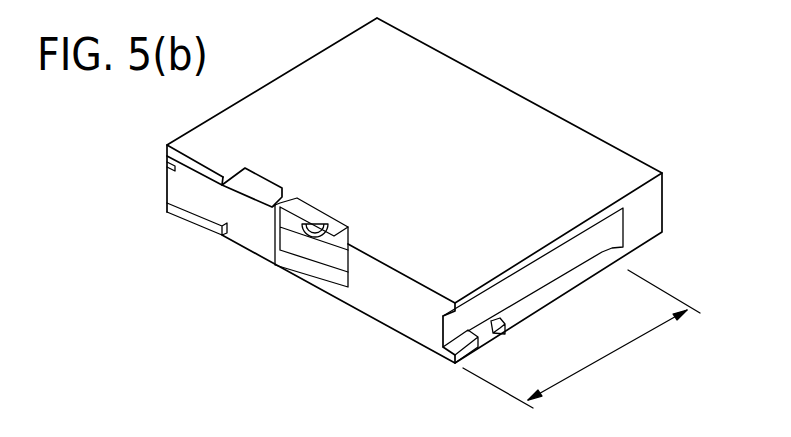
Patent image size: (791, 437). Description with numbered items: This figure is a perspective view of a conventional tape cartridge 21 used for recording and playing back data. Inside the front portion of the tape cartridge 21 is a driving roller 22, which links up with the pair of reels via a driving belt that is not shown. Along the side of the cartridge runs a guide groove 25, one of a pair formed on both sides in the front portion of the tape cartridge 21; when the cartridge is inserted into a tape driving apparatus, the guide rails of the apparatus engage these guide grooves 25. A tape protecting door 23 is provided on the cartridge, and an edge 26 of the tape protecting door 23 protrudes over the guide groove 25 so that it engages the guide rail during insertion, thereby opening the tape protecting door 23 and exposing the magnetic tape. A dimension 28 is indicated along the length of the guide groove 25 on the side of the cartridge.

The tape cartridge 21 is at (525, 112).
The driving roller 22 is at (317, 217).
The tape protecting door 23 is at (247, 234).
The guide groove 25 is at (498, 298).
The edge of tape protecting door 26 is at (176, 185).
The rail length dimension 28 is at (603, 357).